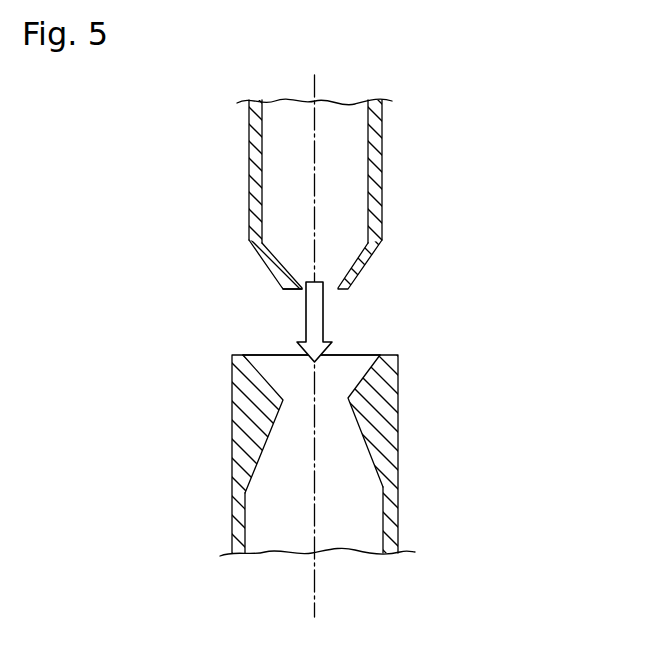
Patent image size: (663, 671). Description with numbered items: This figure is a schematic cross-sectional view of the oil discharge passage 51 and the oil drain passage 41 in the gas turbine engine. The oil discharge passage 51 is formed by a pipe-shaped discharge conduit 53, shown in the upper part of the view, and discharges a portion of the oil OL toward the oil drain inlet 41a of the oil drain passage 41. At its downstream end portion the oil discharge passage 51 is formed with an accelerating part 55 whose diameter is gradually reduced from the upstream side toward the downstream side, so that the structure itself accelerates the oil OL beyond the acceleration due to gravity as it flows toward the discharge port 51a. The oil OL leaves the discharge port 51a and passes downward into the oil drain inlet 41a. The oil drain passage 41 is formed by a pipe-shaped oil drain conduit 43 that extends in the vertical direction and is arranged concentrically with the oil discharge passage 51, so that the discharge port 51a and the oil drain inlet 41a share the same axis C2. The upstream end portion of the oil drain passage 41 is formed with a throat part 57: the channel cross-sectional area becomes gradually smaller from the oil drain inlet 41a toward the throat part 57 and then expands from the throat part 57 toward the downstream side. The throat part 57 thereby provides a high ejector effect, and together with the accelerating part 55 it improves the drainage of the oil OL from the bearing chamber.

The oil discharge passage 51 is at (313, 208).
The discharge conduit 53 is at (313, 208).
The discharge port 51a is at (298, 291).
The accelerating part 55 is at (372, 255).
The axis C2 is at (316, 187).
The oil OL is at (323, 312).
The oil drain passage 41 is at (314, 446).
The oil drain inlet 41a is at (358, 355).
The throat part 57 is at (363, 405).
The oil drain conduit 43 is at (314, 446).